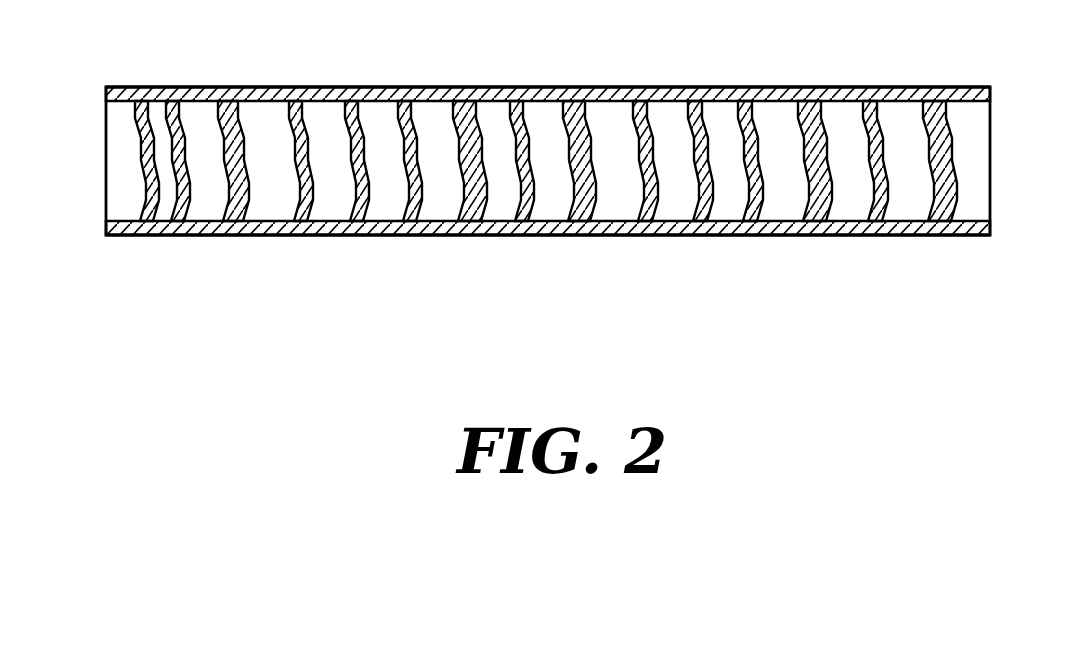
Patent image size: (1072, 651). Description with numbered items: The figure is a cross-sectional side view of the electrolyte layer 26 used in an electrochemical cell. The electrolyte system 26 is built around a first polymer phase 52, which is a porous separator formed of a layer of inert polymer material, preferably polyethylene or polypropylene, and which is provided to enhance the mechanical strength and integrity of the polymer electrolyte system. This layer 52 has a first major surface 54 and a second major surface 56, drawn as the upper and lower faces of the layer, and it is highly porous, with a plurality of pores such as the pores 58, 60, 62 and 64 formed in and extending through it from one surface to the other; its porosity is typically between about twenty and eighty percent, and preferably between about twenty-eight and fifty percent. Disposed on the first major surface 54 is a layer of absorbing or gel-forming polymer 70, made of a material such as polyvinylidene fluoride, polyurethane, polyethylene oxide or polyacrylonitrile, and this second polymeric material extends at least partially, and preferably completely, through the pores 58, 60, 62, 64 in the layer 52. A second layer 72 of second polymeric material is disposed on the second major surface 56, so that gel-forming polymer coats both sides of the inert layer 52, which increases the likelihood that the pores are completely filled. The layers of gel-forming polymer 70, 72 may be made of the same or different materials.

The electrolyte layer 26 is at (892, 388).
The first polymer phase 52 is at (990, 167).
The first major surface 54 is at (973, 94).
The second major surface 56 is at (985, 238).
The pore 58 is at (227, 218).
The pore 60 is at (350, 220).
The pore 62 is at (470, 214).
The pore 64 is at (645, 214).
The layer of absorbing or gel-forming polymer 70 is at (140, 90).
The second layer of second polymeric material 72 is at (107, 234).